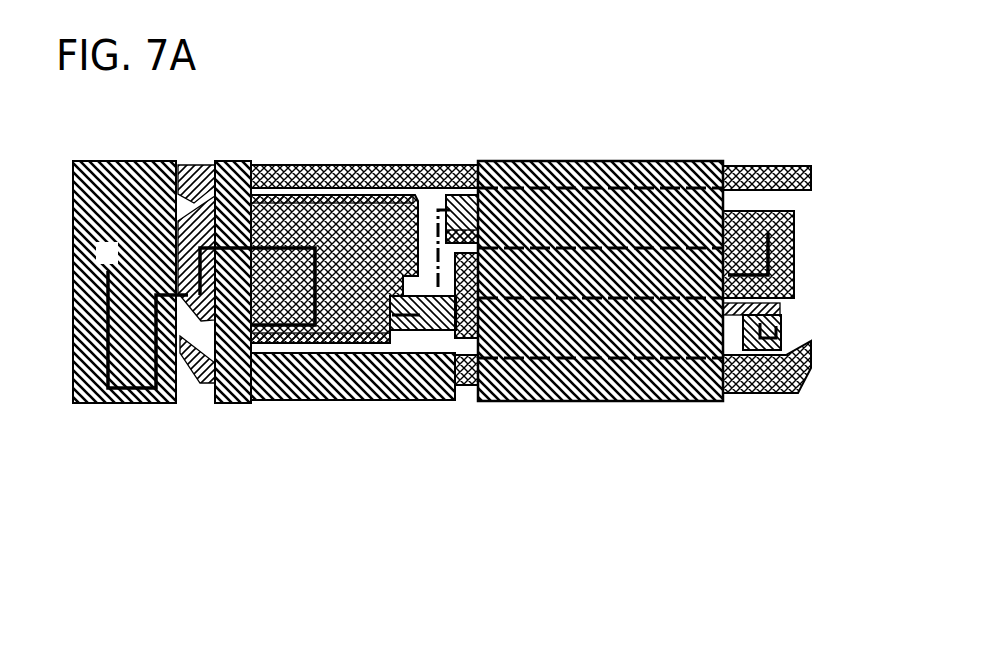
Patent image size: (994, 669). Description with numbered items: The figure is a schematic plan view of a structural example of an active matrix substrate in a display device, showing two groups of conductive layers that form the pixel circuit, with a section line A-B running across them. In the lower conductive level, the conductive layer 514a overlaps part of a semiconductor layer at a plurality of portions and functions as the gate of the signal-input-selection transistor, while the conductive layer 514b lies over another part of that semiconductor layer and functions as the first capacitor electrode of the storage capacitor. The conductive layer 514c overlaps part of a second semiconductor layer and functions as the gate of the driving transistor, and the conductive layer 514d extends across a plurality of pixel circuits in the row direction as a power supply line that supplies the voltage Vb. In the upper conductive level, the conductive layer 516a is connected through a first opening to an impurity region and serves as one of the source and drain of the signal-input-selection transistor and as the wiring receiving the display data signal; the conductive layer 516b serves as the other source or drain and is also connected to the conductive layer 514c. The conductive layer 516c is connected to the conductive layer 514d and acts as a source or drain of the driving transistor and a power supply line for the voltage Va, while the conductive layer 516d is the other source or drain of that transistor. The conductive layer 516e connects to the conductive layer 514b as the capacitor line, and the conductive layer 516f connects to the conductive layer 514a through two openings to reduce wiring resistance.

The conductive layer 514a is at (177, 395).
The conductive layer 514b is at (350, 195).
The conductive layer 514c is at (778, 203).
The conductive layer 514d is at (428, 158).
The conductive layer 516a is at (73, 395).
The conductive layer 516b is at (405, 323).
The conductive layer 516c is at (547, 395).
The conductive layer 516d is at (745, 343).
The conductive layer 516e is at (217, 395).
The conductive layer 516f is at (343, 395).